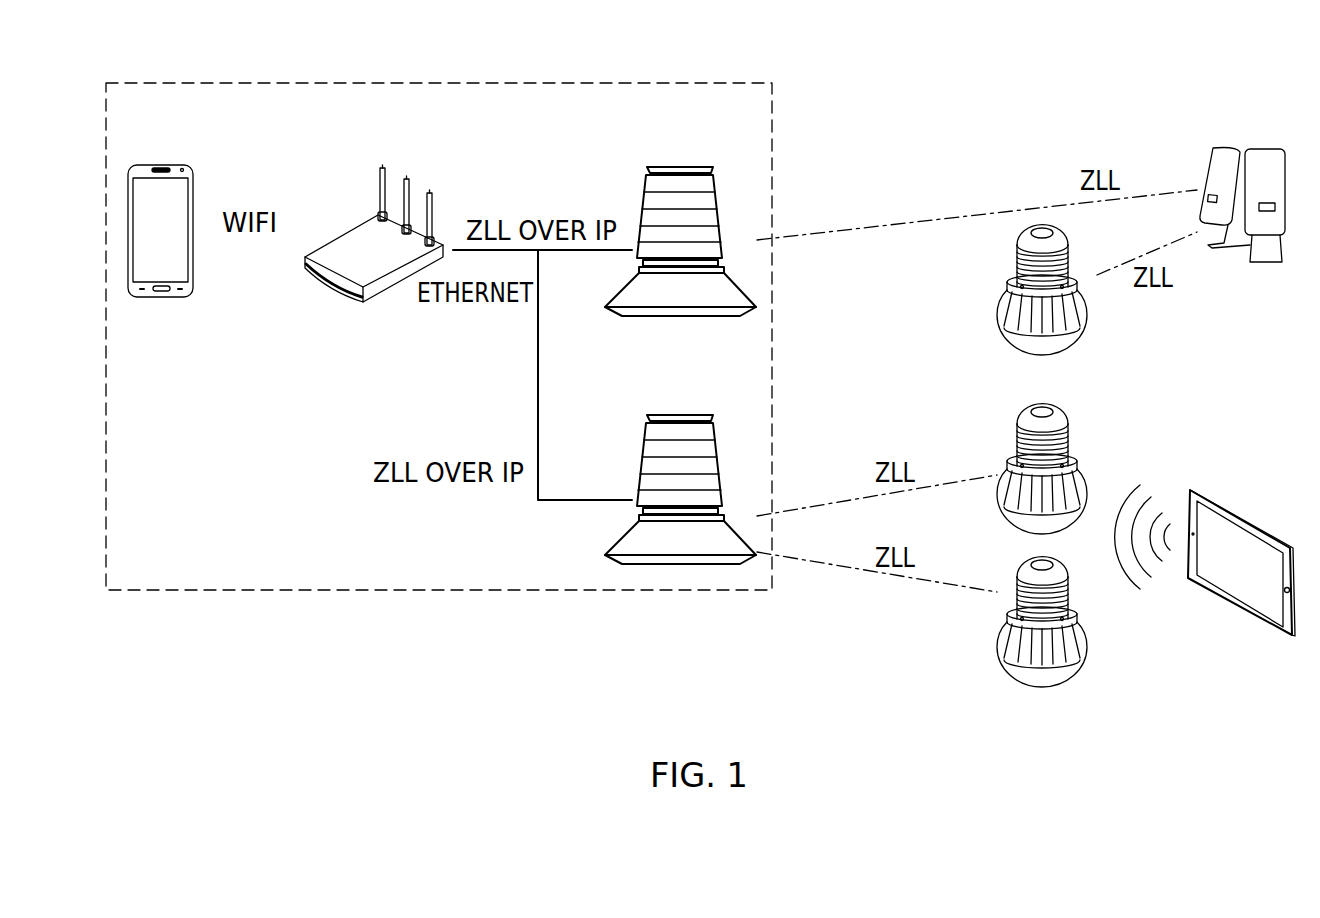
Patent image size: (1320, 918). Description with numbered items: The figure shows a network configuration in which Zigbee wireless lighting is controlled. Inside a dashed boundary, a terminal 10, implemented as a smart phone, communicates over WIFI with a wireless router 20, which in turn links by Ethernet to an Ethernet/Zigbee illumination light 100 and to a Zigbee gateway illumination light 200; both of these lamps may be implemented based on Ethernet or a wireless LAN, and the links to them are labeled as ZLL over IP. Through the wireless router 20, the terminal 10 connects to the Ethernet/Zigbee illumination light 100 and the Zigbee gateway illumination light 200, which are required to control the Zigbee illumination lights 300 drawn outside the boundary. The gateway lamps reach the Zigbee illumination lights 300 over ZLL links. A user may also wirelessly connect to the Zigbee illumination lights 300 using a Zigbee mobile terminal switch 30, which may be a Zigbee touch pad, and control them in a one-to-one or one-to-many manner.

The terminal 10 is at (168, 166).
The wireless router 20 is at (362, 230).
The Zigbee mobile terminal switch 30 is at (1257, 150).
The Ethernet/Zigbee illumination light 100 is at (683, 167).
The Zigbee gateway illumination light 200 is at (683, 415).
The Zigbee illumination lights 300 is at (1010, 282).